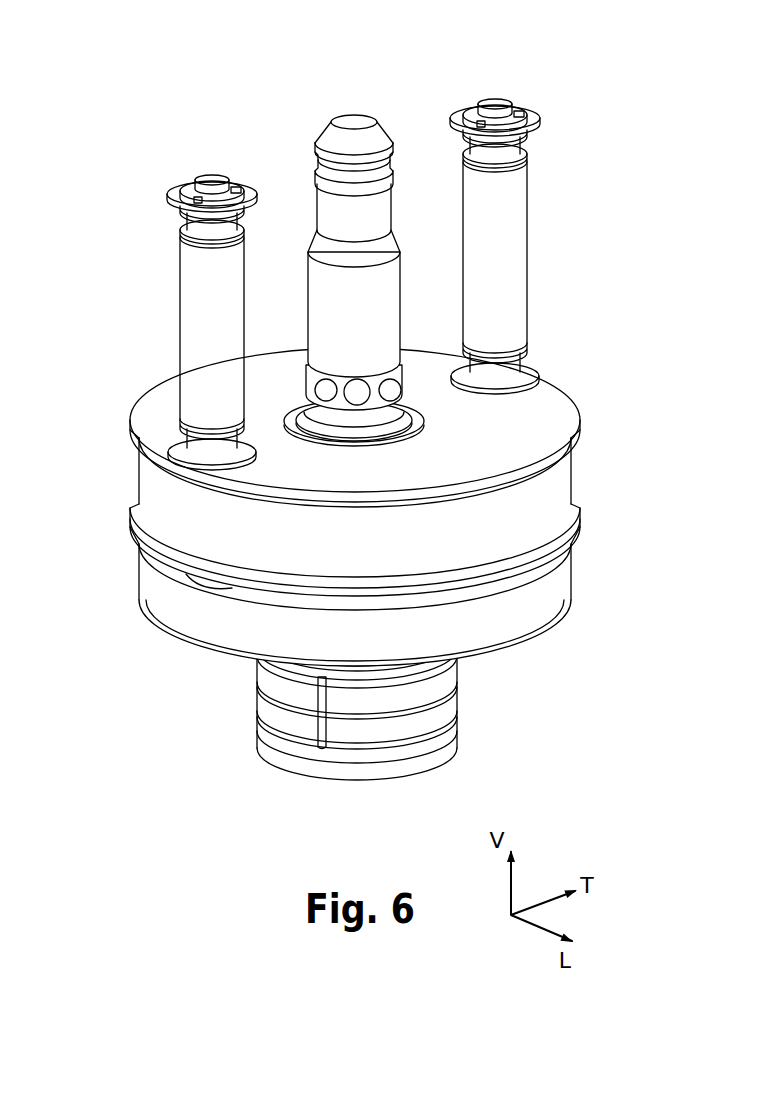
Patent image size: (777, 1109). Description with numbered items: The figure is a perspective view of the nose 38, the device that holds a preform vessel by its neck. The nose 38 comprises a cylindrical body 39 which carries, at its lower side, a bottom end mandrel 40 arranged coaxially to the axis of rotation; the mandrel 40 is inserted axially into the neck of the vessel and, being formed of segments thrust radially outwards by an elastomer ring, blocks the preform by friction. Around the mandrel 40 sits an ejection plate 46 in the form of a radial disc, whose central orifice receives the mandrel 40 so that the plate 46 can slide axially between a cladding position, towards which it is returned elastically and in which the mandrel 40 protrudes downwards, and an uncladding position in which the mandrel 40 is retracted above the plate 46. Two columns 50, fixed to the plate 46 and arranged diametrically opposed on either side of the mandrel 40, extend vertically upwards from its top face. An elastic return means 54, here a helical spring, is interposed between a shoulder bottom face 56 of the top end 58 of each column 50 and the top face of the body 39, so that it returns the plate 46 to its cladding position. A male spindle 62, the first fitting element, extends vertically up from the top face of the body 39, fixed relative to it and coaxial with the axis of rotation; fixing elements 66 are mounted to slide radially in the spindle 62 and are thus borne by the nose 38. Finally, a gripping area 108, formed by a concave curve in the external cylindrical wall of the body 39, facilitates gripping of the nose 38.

The nose 38 is at (303, 98).
The cylindrical body 39 is at (557, 483).
The bottom end mandrel 40 is at (450, 705).
The ejection plate 46 is at (558, 587).
The column 50 is at (507, 360).
The elastic return means 54 is at (522, 173).
The shoulder bottom face 56 is at (537, 130).
The top end 58 is at (496, 100).
The male spindle 62 is at (327, 210).
The fixing elements 66 is at (362, 393).
The gripping area 108 is at (155, 485).